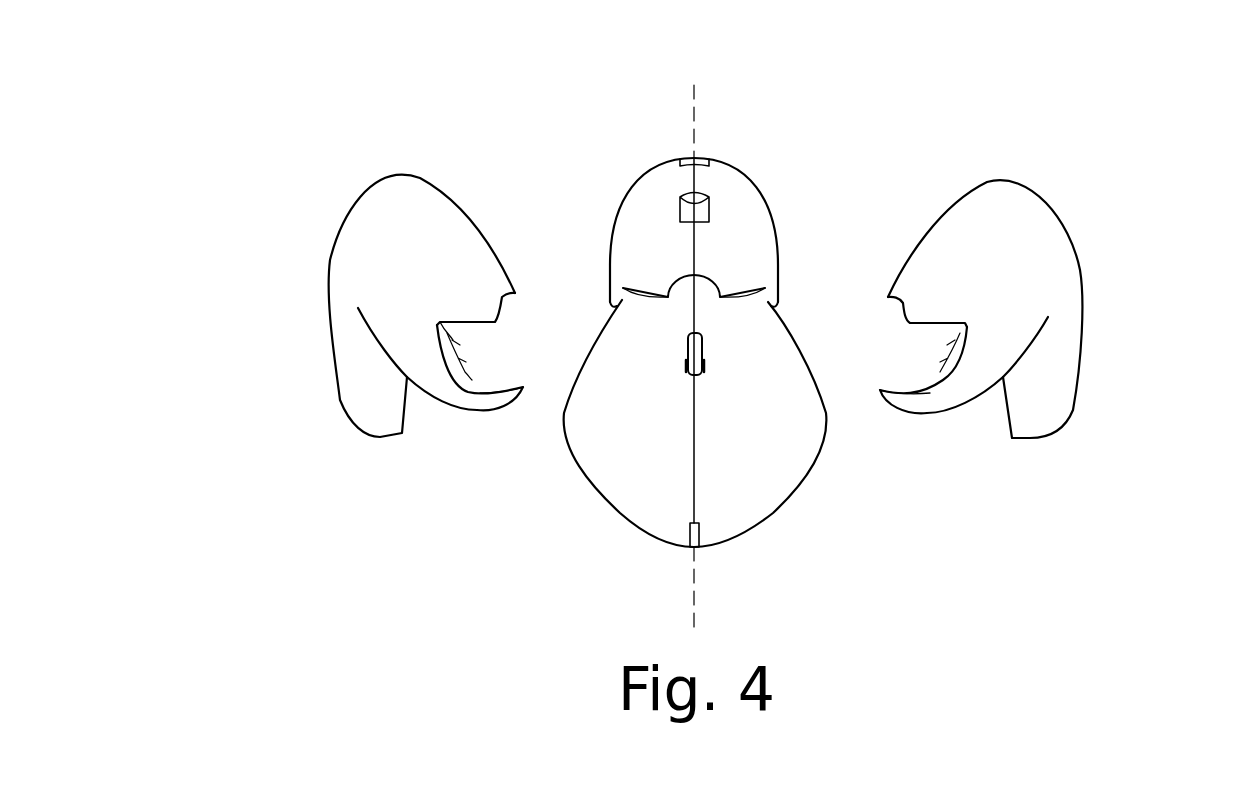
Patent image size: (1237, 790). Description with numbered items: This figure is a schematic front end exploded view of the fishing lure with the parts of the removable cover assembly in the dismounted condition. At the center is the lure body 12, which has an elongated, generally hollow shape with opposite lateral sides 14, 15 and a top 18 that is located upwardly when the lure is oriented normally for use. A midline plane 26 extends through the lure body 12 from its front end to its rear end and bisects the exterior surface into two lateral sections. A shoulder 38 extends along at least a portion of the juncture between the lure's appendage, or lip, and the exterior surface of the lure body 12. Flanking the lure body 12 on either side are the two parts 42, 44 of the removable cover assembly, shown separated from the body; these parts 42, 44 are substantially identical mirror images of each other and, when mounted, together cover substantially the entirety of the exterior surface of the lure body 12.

The lure body 12 is at (738, 148).
The lateral side 14 is at (745, 225).
The lateral side 15 is at (652, 217).
The top 18 is at (652, 168).
The midline plane 26 is at (695, 615).
The shoulder 38 is at (647, 295).
The part of cover assembly 42 is at (1042, 272).
The part of cover assembly 44 is at (367, 377).